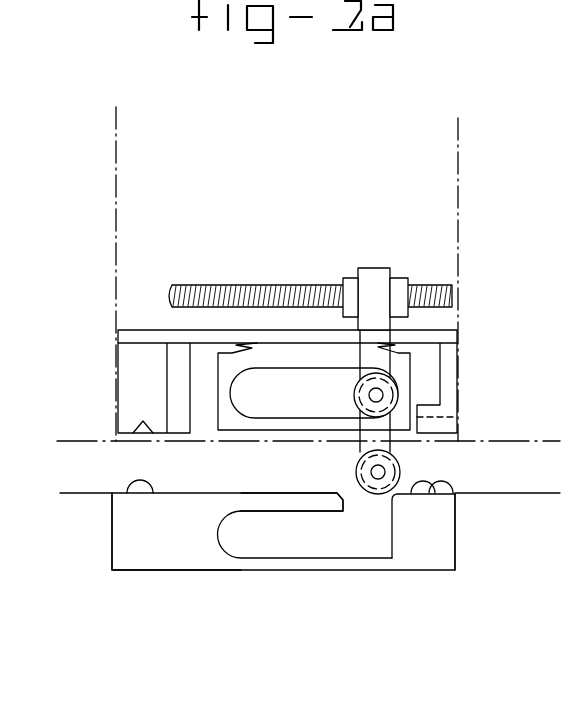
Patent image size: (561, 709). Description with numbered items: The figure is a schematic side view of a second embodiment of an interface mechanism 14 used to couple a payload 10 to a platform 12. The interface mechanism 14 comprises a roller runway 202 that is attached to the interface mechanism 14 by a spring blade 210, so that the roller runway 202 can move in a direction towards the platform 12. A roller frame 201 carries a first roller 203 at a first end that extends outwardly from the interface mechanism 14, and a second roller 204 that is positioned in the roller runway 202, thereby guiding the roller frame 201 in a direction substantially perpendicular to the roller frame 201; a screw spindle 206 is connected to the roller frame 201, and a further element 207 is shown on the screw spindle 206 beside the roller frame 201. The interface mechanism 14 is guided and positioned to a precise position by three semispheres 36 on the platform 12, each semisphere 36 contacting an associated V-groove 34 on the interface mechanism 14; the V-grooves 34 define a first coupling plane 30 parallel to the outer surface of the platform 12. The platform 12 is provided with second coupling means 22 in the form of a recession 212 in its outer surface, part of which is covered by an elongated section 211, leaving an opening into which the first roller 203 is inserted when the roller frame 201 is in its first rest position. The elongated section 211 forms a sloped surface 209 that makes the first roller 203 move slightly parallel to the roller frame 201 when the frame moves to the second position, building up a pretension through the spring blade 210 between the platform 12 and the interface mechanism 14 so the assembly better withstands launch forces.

The payload 10 is at (445, 138).
The platform 12 is at (75, 505).
The interface mechanism 14 is at (118, 362).
The second coupling means 22 is at (162, 553).
The first coupling plane 30 is at (71, 438).
The V-groove 34 is at (143, 432).
The semisphere 36 is at (132, 488).
The roller frame 201 is at (368, 268).
The roller runway 202 is at (403, 367).
The first roller 203 is at (390, 468).
The second roller 204 is at (389, 395).
The screw spindle 206 is at (262, 287).
The spindle nut 207 is at (400, 282).
The sloped surface 209 is at (270, 512).
The spring blade 210 is at (300, 350).
The elongated section 211 is at (268, 493).
The recession 212 is at (340, 535).